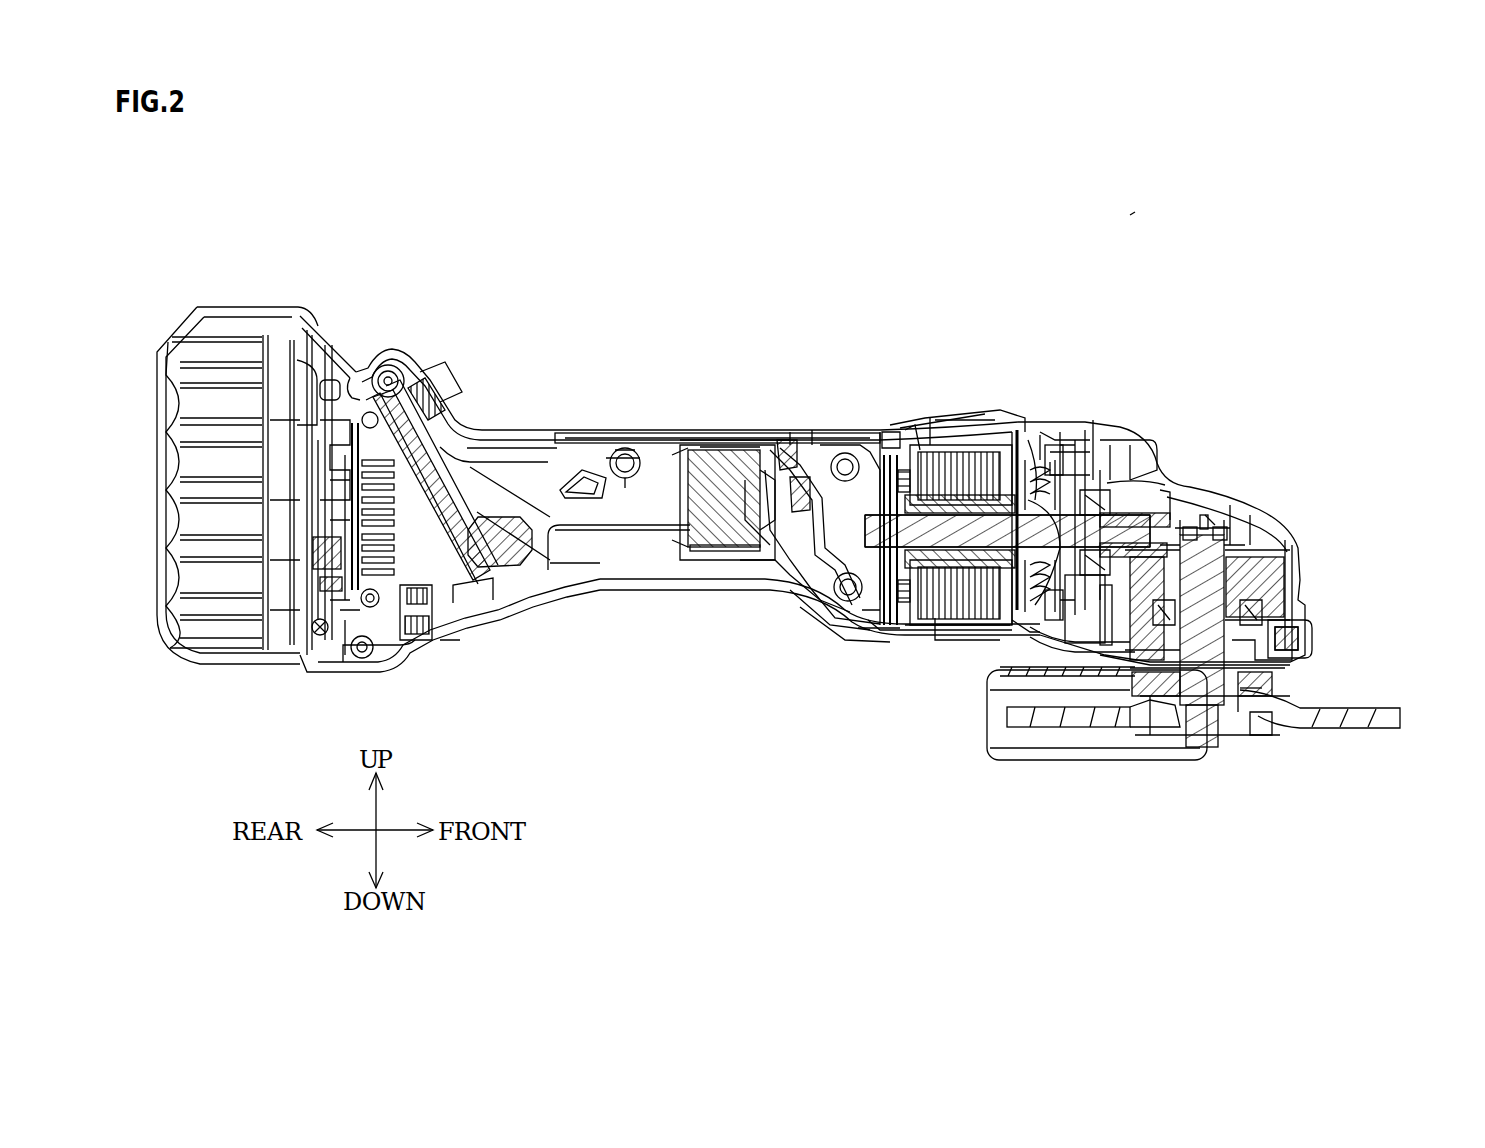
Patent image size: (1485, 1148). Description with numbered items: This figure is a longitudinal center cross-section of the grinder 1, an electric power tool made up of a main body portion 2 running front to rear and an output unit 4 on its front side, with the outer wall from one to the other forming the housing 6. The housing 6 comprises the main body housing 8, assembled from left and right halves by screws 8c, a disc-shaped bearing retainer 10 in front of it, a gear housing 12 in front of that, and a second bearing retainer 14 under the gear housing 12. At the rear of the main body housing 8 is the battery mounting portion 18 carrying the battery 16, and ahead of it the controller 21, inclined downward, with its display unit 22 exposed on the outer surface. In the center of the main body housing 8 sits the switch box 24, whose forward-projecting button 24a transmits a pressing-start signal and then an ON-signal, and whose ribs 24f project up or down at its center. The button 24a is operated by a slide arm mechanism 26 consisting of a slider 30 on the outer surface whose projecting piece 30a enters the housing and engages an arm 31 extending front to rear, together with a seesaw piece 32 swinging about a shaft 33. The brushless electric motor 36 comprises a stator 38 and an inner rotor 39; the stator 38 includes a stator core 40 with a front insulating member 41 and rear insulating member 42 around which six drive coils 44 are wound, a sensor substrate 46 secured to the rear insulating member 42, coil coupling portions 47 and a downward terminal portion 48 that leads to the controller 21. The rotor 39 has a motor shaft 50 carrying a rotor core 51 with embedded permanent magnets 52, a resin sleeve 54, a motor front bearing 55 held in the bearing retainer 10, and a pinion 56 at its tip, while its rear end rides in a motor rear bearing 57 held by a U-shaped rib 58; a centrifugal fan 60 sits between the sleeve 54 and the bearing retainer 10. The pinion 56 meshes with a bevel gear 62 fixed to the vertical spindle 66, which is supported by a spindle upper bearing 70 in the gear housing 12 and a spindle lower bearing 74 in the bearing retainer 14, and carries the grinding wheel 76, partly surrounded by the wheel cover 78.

The grinder 1 is at (1139, 208).
The main body portion 2 is at (612, 280).
The output unit 4 is at (1228, 810).
The housing 6 is at (527, 355).
The main body housing 8 is at (610, 588).
The screws 8c is at (626, 448).
The bearing retainer 10 is at (1083, 440).
The gear housing 12 is at (1278, 522).
The bearing retainer 14 is at (1290, 602).
The battery 16 is at (222, 305).
The battery mounting portion 18 is at (363, 268).
The controller 21 is at (473, 600).
The display unit 22 is at (437, 388).
The switch box 24 is at (698, 443).
The button 24a is at (740, 430).
The ribs 24f is at (702, 430).
The slide arm mechanism 26 is at (938, 284).
The slider 30 is at (955, 448).
The projecting piece 30a is at (978, 440).
The arm 31 is at (832, 440).
The seesaw piece 32 is at (748, 598).
The shaft 33 is at (781, 438).
The electric motor 36 is at (893, 650).
The stator 38 is at (946, 675).
The rotor 39 is at (810, 430).
The stator core 40 is at (898, 668).
The front insulating member 41 is at (1018, 430).
The rear insulating member 42 is at (910, 430).
The drive coils 44 is at (1000, 445).
The sensor substrate 46 is at (895, 425).
The coil coupling portions 47 is at (878, 435).
The terminal portion 48 is at (872, 634).
The motor shaft 50 is at (802, 612).
The rotor core 51 is at (932, 650).
The permanent magnets 52 is at (940, 435).
The resin sleeve 54 is at (1040, 440).
The motor front bearing 55 is at (1112, 450).
The pinion 56 is at (1152, 450).
The motor rear bearing 57 is at (810, 600).
The rib 58 is at (778, 582).
The fan 60 is at (1055, 440).
The bevel gear 62 is at (1290, 566).
The spindle 66 is at (1220, 745).
The spindle upper bearing 70 is at (1210, 530).
The spindle lower bearing 74 is at (1300, 636).
The grinding wheel 76 is at (1385, 710).
The wheel cover 78 is at (1047, 762).